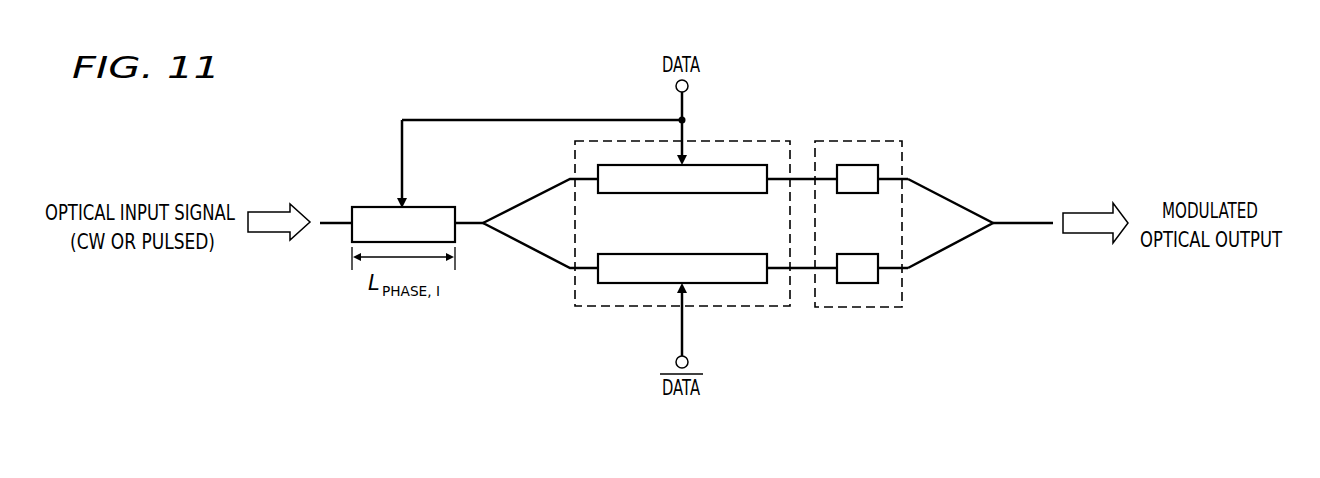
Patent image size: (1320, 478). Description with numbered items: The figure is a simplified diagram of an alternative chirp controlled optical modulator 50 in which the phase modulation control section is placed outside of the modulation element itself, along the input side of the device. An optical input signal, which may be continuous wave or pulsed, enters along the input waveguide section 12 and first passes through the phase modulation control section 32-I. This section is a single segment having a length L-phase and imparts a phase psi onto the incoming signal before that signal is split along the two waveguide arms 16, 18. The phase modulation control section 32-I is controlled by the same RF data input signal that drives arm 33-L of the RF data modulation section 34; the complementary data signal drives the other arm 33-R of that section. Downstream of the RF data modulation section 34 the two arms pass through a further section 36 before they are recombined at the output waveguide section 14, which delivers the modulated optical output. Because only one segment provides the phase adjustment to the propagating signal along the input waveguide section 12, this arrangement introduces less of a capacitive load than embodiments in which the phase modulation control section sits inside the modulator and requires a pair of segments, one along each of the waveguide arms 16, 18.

The optical modulator 50 is at (958, 93).
The phase modulation control section 32-I is at (423, 207).
The input waveguide section 12 is at (472, 226).
The RF data modulation section 34 is at (737, 141).
The arm of RF data modulation section 33-L is at (670, 193).
The arm of RF data modulation section 33-R is at (693, 254).
The phase adjustment section 36 is at (851, 141).
The waveguide arm 16 is at (913, 181).
The waveguide arm 18 is at (913, 268).
The output waveguide section 14 is at (1028, 223).